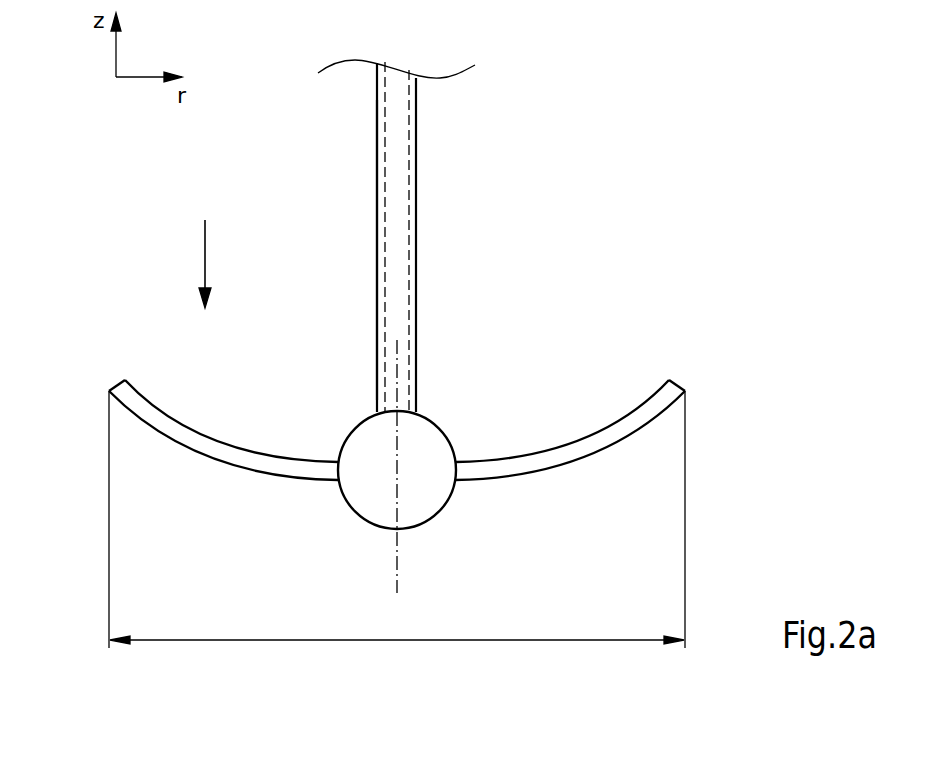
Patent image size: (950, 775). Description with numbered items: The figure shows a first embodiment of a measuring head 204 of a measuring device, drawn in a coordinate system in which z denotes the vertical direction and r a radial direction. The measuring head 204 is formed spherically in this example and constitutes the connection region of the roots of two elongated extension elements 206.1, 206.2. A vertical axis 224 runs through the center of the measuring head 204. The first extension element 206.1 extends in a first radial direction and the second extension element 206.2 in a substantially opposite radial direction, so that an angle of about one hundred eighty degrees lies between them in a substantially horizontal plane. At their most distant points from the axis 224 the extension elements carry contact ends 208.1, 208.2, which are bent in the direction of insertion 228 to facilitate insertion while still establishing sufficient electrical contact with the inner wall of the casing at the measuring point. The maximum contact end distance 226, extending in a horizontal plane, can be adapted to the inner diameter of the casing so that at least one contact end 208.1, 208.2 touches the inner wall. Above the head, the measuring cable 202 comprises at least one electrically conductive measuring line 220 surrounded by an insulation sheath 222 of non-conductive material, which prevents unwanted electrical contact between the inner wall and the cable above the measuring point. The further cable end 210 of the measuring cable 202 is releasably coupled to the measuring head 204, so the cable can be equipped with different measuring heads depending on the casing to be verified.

The measuring cable 202 is at (463, 162).
The measuring head 204 is at (370, 492).
The first extension element 206.1 is at (203, 447).
The second extension element 206.2 is at (592, 447).
The first contact end 208.1 is at (114, 386).
The second contact end 208.2 is at (680, 385).
The further cable end 210 is at (462, 373).
The measuring line 220 is at (398, 139).
The insulation sheath 222 is at (378, 188).
The vertical axis 224 is at (397, 568).
The maximum contact end distance 226 is at (350, 640).
The direction of insertion 228 is at (203, 252).